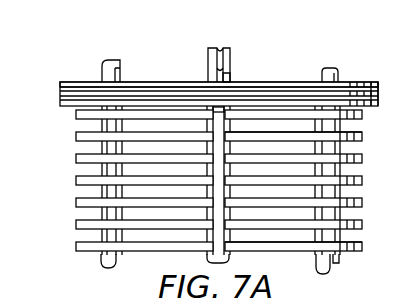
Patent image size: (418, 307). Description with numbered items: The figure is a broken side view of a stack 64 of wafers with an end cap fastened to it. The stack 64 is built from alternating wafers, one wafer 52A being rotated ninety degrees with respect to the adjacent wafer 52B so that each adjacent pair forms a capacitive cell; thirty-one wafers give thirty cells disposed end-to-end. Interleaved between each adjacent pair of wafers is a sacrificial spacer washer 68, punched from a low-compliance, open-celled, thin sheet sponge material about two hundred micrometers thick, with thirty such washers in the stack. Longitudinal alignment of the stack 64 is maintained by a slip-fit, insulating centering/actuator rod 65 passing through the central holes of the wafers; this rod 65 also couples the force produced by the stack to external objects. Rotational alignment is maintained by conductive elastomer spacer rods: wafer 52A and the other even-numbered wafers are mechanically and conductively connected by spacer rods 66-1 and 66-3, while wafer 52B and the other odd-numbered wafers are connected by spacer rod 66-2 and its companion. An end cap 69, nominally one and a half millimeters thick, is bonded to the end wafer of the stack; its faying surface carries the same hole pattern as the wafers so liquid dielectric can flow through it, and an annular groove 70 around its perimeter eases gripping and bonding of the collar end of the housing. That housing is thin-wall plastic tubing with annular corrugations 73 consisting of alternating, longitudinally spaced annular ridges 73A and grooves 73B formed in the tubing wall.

The annular groove 70 is at (62, 92).
The end cap 69 is at (80, 82).
The spacer rod 66-3 is at (118, 70).
The stack 64 is at (193, 60).
The centering/actuator rod 65 is at (224, 54).
The spacer rod 66-2 is at (230, 78).
The spacer rod 66-1 is at (340, 80).
The annular corrugations 73 is at (394, 91).
The annular ridge 73A is at (307, 129).
The sacrificial spacer washer 68 is at (307, 172).
The annular groove 73B is at (307, 239).
The wafer 52A is at (76, 139).
The wafer 52B is at (76, 160).